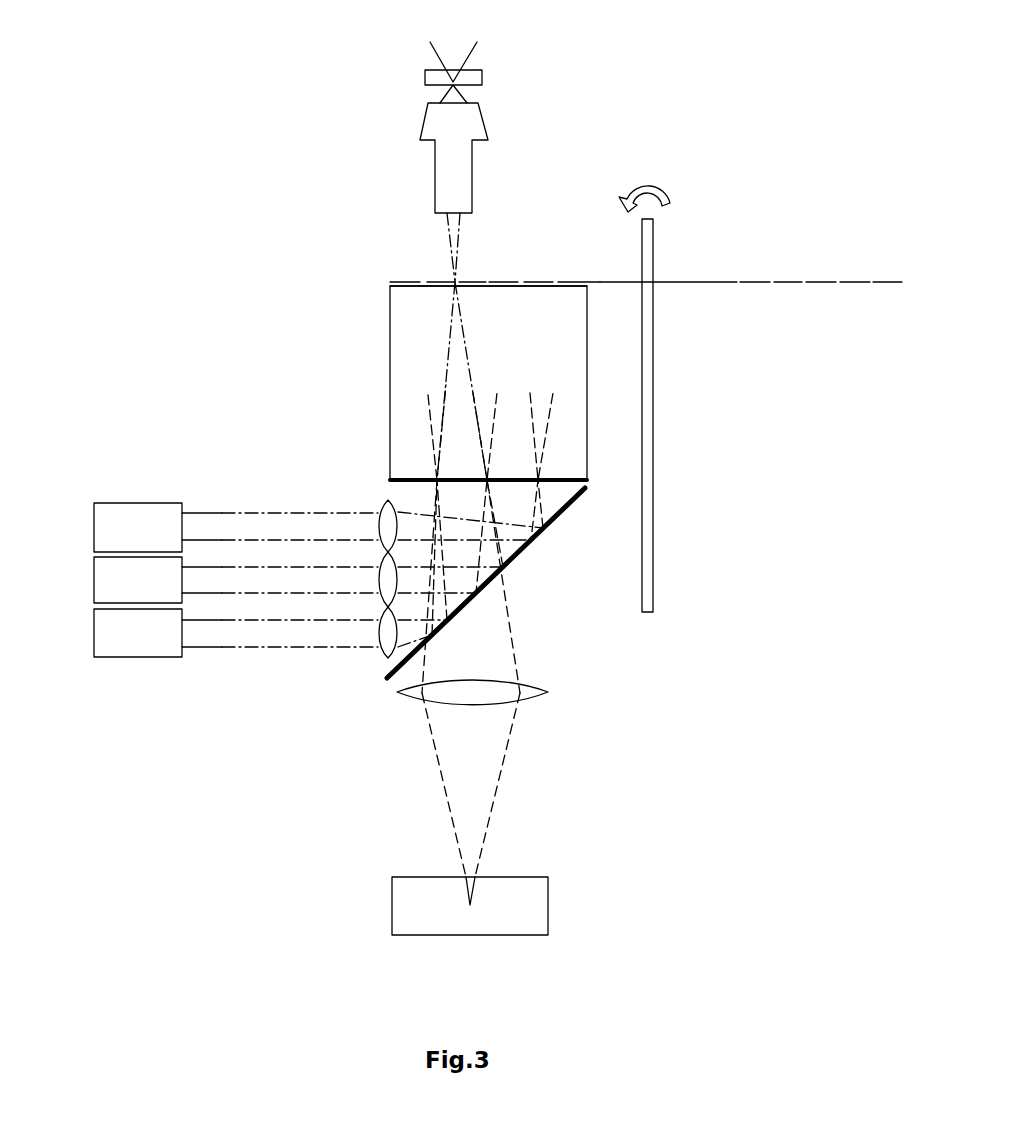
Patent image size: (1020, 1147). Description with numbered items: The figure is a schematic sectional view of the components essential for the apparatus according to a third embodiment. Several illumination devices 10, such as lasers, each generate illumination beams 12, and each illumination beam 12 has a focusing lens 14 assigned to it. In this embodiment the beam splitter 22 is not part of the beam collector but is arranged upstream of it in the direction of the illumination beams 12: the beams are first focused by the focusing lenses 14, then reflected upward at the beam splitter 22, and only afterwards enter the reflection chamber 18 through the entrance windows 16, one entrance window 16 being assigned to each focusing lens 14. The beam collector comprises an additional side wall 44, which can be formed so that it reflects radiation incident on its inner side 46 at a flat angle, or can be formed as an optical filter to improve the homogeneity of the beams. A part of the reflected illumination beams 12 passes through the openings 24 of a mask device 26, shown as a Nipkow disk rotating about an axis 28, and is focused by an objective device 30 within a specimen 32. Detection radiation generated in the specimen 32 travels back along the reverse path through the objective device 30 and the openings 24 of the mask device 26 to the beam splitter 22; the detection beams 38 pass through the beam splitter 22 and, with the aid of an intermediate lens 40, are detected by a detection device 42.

The illumination device 10 is at (127, 510).
The illumination beams 12 is at (457, 233).
The focusing lens 14 is at (388, 523).
The entrance window 16 is at (437, 476).
The reflection chamber 18 is at (435, 370).
The beam splitter 22 is at (562, 513).
The openings 24 is at (487, 281).
The mask device 26 is at (690, 282).
The axis 28 is at (645, 362).
The objective device 30 is at (462, 181).
The specimen 32 is at (485, 80).
The detection beams 38 is at (472, 650).
The intermediate lens 40 is at (397, 693).
The detection device 42 is at (415, 898).
The side wall 44 is at (412, 287).
The inner side 46 is at (502, 287).